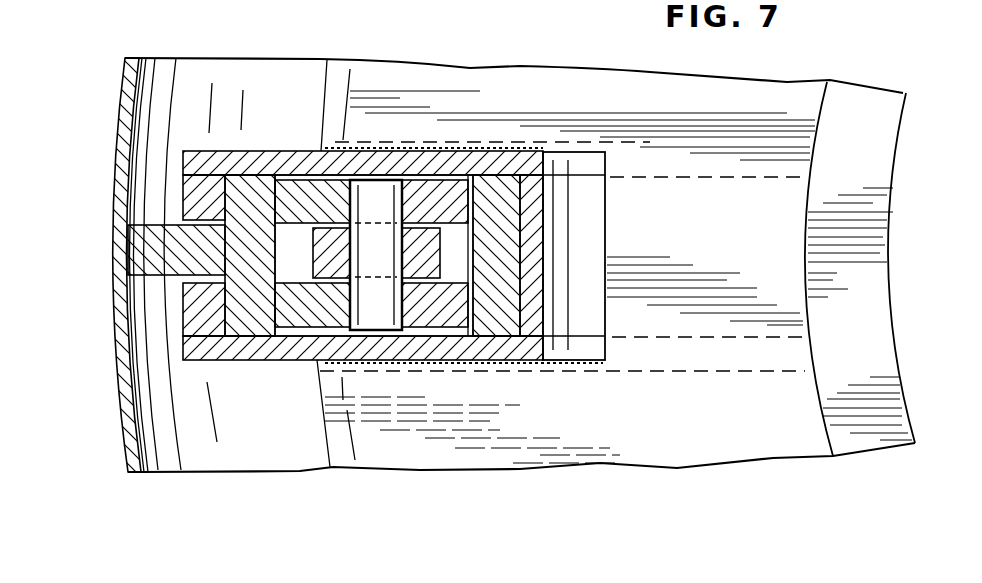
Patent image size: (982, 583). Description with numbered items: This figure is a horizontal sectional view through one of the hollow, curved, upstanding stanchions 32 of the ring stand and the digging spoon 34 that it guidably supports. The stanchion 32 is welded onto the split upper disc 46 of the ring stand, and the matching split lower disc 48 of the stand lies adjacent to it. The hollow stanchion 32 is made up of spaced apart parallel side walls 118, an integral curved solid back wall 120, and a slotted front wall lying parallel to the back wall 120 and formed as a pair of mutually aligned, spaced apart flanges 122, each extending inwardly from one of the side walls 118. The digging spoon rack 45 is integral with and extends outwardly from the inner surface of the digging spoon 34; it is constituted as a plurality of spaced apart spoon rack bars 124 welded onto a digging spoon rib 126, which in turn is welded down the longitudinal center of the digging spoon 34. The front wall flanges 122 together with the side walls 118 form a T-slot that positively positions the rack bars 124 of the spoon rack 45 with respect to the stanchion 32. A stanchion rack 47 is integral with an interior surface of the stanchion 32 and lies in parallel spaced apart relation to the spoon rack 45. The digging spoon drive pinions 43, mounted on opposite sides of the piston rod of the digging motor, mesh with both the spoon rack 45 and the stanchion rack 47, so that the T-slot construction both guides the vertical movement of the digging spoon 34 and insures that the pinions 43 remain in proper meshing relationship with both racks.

The stanchion 32 is at (590, 222).
The digging spoon 34 is at (122, 98).
The digging spoon drive pinion 43 is at (443, 192).
The digging spoon rack 45 is at (258, 183).
The split upper disc 46 is at (750, 98).
The stanchion rack 47 is at (510, 262).
The split lower disc 48 is at (868, 108).
The side wall 118 is at (287, 150).
The back wall 120 is at (533, 203).
The front wall flange 122 is at (200, 195).
The spoon rack bar 124 is at (233, 187).
The digging spoon rib 126 is at (150, 258).